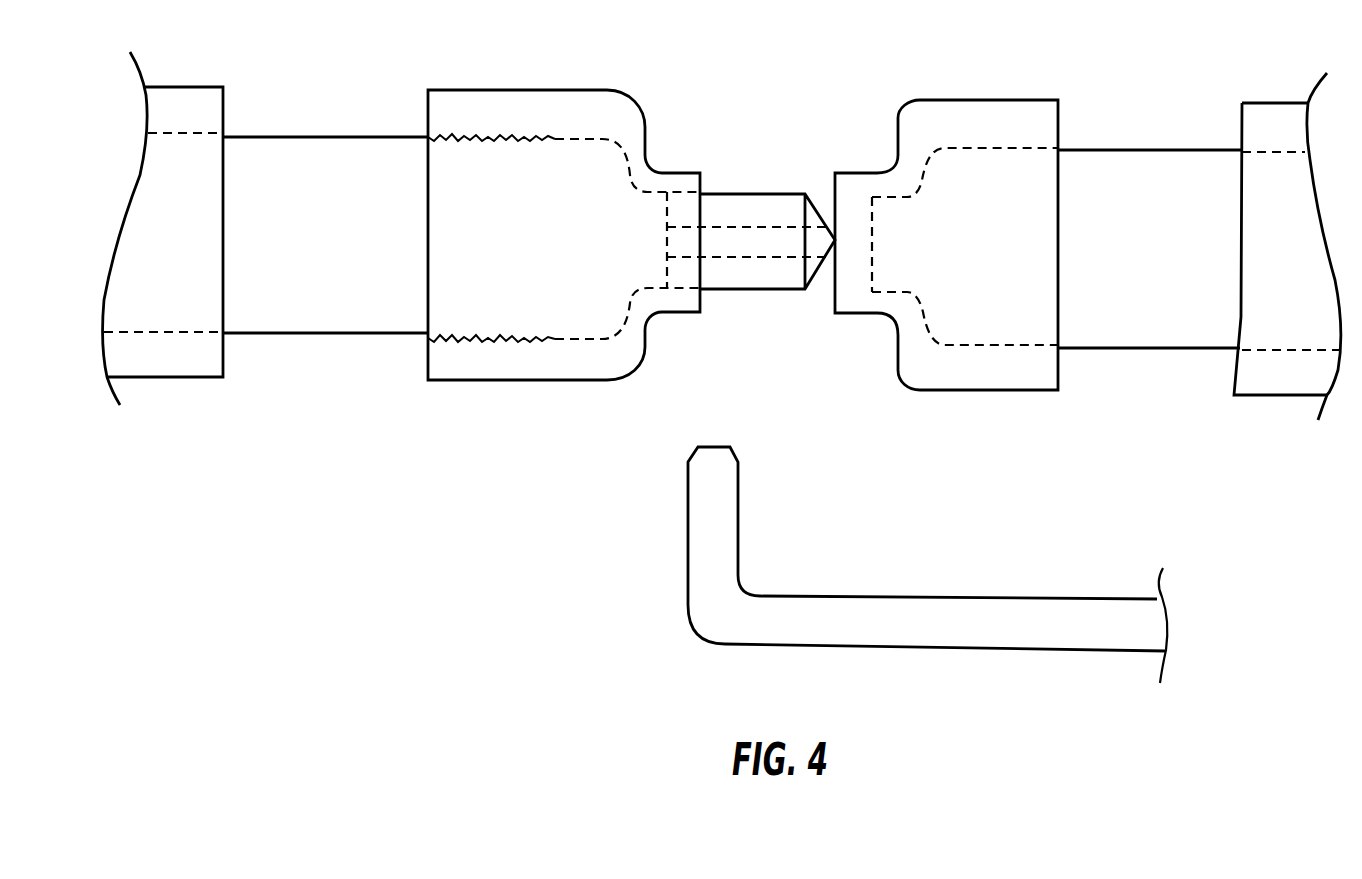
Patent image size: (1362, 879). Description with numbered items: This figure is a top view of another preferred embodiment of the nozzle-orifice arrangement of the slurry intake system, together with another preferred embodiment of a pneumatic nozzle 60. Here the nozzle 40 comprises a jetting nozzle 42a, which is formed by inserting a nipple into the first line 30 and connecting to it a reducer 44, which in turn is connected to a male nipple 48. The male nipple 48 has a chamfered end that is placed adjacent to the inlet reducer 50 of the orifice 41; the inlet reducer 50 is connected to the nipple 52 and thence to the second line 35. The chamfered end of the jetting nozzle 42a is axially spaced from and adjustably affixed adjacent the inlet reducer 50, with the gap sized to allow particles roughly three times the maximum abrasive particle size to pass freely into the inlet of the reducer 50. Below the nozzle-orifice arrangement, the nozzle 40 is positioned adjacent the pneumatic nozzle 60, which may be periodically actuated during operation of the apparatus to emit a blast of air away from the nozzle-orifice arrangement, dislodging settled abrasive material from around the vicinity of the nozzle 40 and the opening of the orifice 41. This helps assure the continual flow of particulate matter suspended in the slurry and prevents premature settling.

The first line 30 is at (190, 252).
The jetting nozzle 42a is at (352, 252).
The reducer 44 is at (565, 257).
The male nipple 48 is at (805, 282).
The inlet reducer 50 is at (990, 262).
The nipple 52 is at (1163, 268).
The second line 35 is at (1305, 268).
The nozzle 40 is at (648, 60).
The orifice 41 is at (962, 65).
The pneumatic nozzle 60 is at (963, 642).